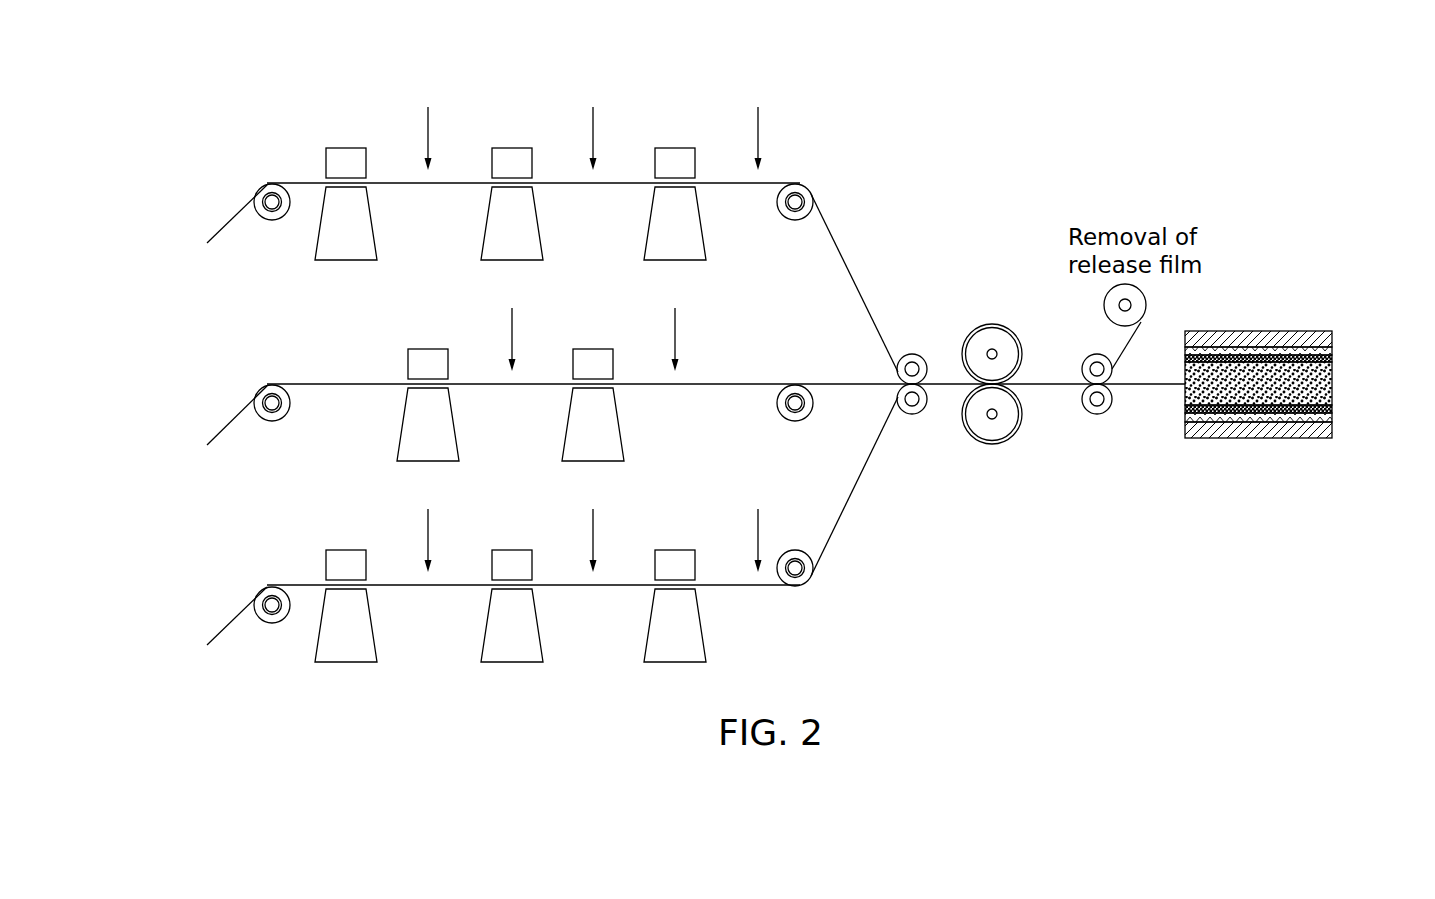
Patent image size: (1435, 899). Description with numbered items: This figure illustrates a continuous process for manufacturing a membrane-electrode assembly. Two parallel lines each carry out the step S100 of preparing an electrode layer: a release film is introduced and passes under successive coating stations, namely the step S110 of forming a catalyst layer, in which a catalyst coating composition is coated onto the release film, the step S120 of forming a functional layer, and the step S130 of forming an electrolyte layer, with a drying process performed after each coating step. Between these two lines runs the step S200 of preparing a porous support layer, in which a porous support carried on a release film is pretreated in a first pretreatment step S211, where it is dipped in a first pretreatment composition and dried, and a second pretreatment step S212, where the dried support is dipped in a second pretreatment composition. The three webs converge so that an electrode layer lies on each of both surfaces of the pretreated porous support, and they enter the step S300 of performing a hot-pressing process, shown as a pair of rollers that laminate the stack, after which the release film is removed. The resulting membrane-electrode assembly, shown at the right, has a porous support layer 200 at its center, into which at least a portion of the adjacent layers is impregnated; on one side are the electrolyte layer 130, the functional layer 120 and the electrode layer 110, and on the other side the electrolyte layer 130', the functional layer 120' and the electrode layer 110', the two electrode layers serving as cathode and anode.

The step of preparing an electrode layer S100 is at (353, 86).
The step of forming a catalyst layer S110 is at (349, 146).
The step of forming a functional layer S120 is at (513, 146).
The step of forming an electrolyte layer S130 is at (678, 146).
The step of preparing a porous support layer S200 is at (353, 324).
The first pretreatment step S211 is at (432, 347).
The second pretreatment step S212 is at (598, 347).
The step of performing a hot-pressing process S300 is at (992, 323).
The electrode layer 110 is at (1299, 310).
The functional layer 120 is at (1299, 330).
The electrolyte layer 130 is at (1299, 352).
The porous support layer 200 is at (1332, 384).
The electrolyte layer 130' is at (1302, 419).
The functional layer 120' is at (1302, 439).
The electrode layer 110' is at (1302, 460).